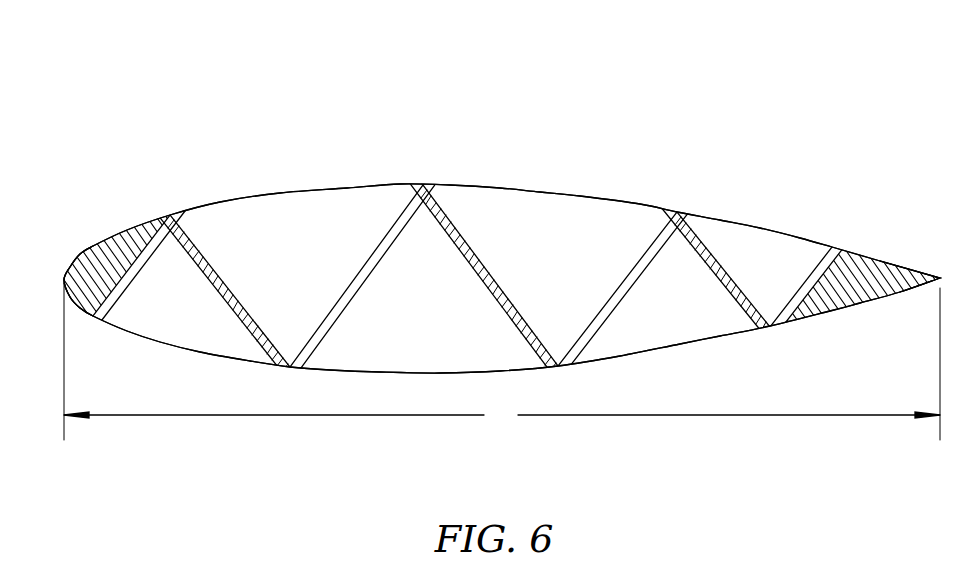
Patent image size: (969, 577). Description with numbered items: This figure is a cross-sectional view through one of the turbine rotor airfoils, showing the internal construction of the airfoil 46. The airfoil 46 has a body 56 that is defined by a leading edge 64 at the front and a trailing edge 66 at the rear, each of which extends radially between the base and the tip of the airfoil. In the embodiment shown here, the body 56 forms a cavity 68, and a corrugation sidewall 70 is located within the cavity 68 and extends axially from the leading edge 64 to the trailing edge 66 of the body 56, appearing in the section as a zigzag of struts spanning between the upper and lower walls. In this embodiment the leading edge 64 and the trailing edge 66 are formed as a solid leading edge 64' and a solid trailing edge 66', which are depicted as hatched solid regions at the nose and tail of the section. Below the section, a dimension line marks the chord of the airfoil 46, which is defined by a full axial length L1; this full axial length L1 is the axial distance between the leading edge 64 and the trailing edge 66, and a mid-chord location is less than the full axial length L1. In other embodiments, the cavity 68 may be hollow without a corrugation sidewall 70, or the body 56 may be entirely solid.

The airfoil 46 is at (150, 123).
The body 56 is at (133, 178).
The leading edge 64 is at (60, 262).
The solid leading edge 64' is at (121, 264).
The trailing edge 66 is at (912, 242).
The solid trailing edge 66' is at (841, 285).
The cavity 68 is at (320, 223).
The corrugation sidewall 70 is at (220, 277).
The full axial length L1 is at (502, 361).